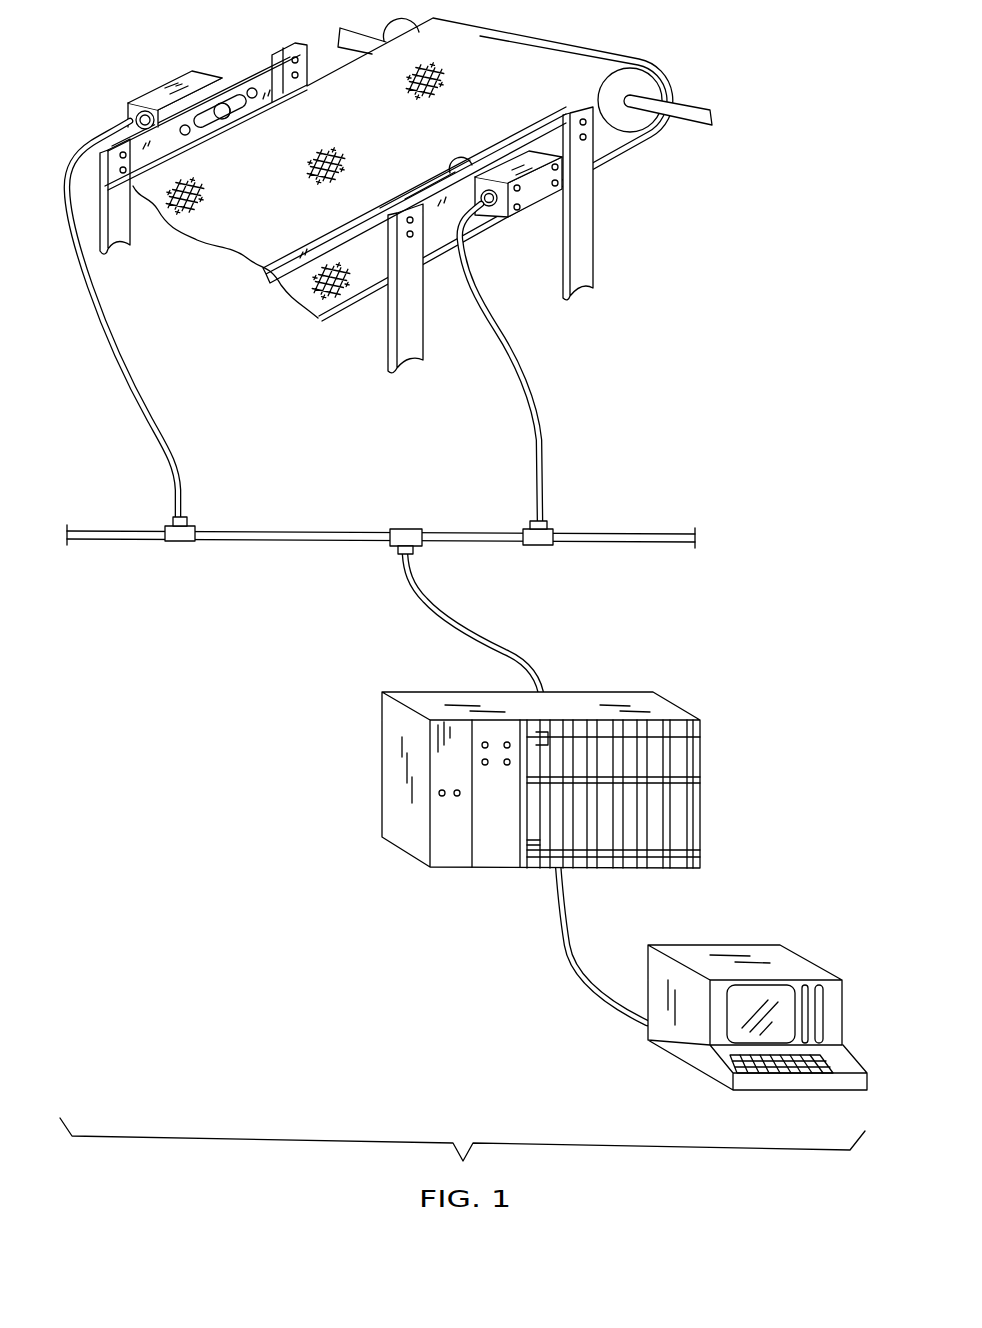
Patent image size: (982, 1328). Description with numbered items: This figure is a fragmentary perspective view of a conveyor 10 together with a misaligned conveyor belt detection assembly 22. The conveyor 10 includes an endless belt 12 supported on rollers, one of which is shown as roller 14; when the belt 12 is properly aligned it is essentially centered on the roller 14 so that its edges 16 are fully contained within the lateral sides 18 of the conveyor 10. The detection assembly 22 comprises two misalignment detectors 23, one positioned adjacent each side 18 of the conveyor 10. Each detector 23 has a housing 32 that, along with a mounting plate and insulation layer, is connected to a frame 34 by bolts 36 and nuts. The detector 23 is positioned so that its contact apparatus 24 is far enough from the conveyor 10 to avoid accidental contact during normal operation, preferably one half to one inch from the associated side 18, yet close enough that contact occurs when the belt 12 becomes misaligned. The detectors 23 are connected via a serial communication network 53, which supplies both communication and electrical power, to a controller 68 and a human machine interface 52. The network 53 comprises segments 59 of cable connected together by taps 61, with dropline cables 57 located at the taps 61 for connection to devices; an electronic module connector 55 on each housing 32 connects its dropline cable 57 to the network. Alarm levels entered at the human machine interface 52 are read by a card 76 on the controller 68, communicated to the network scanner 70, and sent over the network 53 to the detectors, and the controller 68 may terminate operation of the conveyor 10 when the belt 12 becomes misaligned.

The conveyor 10 is at (213, 232).
The endless belt 12 is at (576, 60).
The roller 14 is at (640, 133).
The belt edges 16 is at (517, 145).
The lateral sides 18 is at (310, 83).
The misaligned conveyor belt detection assembly 22 is at (688, 233).
The misalignment detector 23 is at (150, 86).
The contact apparatus 24 is at (226, 117).
The housing 32 is at (195, 74).
The frame 34 is at (247, 68).
The bolts 36 is at (559, 183).
The human machine interface 52 is at (836, 965).
The serial communication network 53 is at (357, 490).
The electronic module connector 55 is at (128, 125).
The dropline cable 57 is at (157, 412).
The cable segments 59 is at (297, 530).
The taps 61 is at (178, 543).
The controller 68 is at (390, 802).
The scanner 70 is at (532, 866).
The card 76 is at (560, 737).